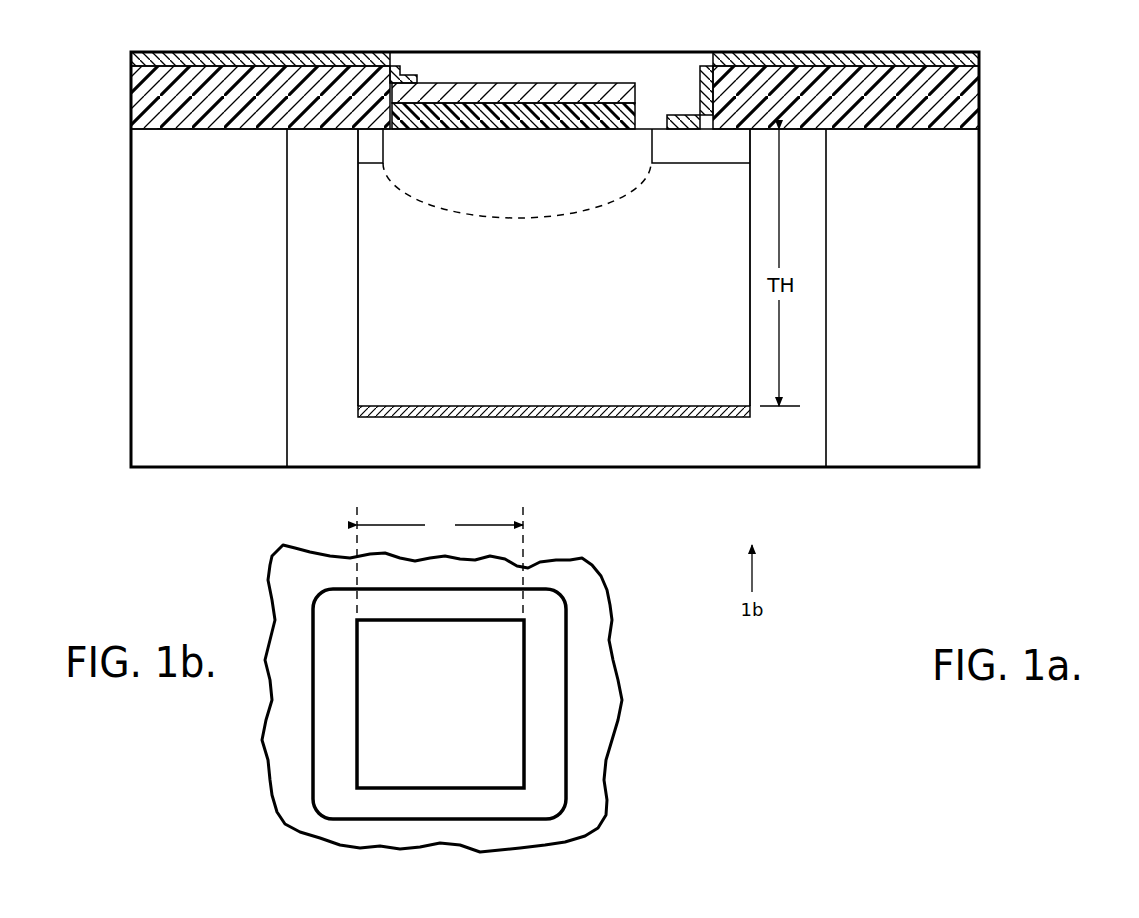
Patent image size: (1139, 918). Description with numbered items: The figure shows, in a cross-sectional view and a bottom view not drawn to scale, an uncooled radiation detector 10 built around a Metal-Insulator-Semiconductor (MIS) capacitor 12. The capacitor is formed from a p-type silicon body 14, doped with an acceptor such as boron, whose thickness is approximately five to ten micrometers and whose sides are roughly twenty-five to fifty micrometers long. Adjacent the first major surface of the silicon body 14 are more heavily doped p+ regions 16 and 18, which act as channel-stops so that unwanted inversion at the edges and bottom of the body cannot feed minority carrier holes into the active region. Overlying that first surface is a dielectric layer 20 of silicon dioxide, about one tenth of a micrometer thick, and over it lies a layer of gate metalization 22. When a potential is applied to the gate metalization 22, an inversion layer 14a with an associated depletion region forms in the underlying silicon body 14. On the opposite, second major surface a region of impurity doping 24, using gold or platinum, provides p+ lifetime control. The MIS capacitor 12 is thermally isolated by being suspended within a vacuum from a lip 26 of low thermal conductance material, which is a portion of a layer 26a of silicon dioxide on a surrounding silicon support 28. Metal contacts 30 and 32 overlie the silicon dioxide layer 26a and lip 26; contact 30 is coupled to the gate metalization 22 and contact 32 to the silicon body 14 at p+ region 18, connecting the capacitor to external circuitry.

In FIG. 1a, the uncooled radiation detector 10 is at (982, 552).
In FIG. 1a, the Metal-Insulator-Semiconductor (MIS) capacitor 12 is at (350, 425).
In FIG. 1a, the p-type silicon body 14 is at (358, 326).
In FIG. 1b, the p-type silicon body 14 is at (525, 743).
In FIG. 1a, the inversion layer 14a is at (517, 185).
In FIG. 1a, the p+ region 16 is at (358, 147).
In FIG. 1a, the p+ region 18 is at (725, 163).
In FIG. 1a, the dielectric layer 20 is at (637, 116).
In FIG. 1a, the gate metalization 22 is at (503, 83).
In FIG. 1a, the region of impurity doping 24 is at (642, 418).
In FIG. 1b, the region of impurity doping 24 is at (440, 704).
In FIG. 1a, the lip 26 is at (293, 130).
In FIG. 1b, the lip 26 is at (541, 628).
In FIG. 1a, the layer of silicon dioxide 26a is at (130, 97).
In FIG. 1a, the silicon support 28 is at (130, 243).
In FIG. 1b, the silicon support 28 is at (594, 661).
In FIG. 1a, the metal contact 30 is at (191, 52).
In FIG. 1a, the metal contact 32 is at (878, 52).